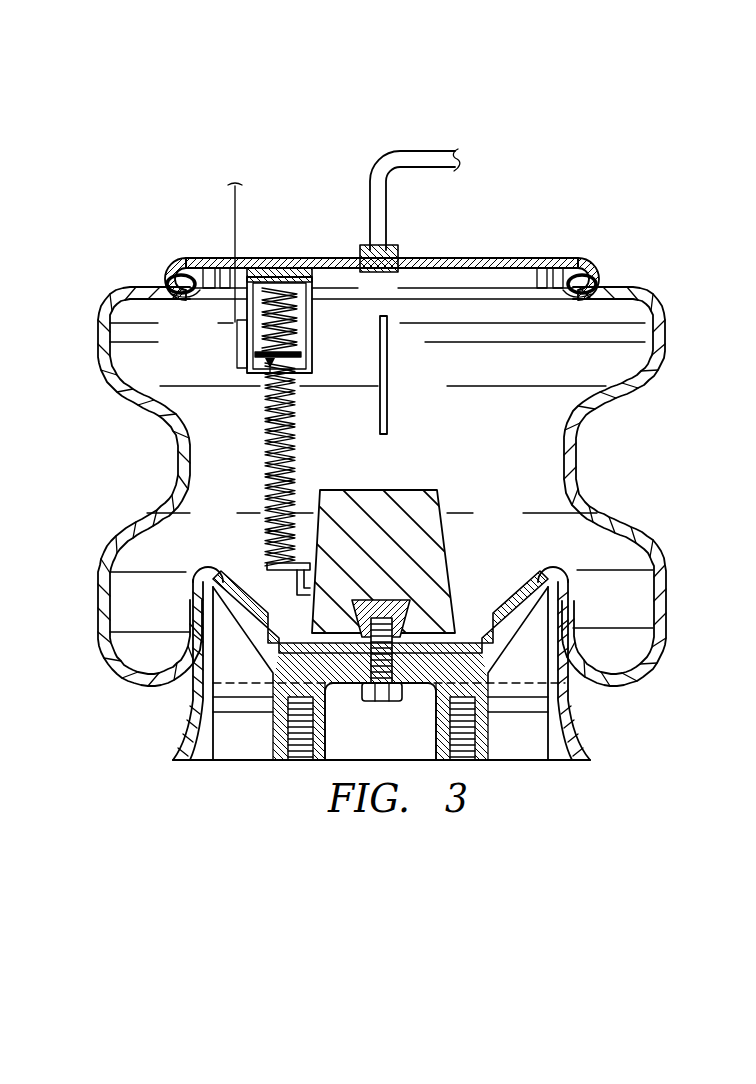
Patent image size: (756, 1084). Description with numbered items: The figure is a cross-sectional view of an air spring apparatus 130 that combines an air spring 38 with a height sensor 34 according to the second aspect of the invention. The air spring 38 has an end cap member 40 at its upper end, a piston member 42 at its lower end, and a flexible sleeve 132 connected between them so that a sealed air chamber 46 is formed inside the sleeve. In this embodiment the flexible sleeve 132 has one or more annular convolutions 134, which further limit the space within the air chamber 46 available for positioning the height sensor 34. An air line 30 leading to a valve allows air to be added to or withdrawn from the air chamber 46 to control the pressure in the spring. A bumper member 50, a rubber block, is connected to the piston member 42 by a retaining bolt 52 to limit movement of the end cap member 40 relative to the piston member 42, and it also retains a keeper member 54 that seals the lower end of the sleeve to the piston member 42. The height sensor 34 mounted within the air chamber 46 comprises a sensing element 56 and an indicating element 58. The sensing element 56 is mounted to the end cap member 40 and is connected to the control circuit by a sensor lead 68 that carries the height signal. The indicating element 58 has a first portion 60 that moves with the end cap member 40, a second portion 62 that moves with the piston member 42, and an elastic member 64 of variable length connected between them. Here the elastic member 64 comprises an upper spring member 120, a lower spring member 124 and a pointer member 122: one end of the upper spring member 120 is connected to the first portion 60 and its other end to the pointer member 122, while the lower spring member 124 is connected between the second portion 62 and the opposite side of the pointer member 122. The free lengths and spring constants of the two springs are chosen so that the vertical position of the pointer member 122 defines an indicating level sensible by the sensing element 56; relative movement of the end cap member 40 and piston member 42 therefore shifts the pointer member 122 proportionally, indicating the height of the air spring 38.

The air line 30 is at (436, 150).
The height sensor 34 is at (158, 357).
The air spring 38 is at (660, 285).
The end cap member 40 is at (494, 258).
The piston member 42 is at (570, 712).
The air chamber 46 is at (512, 451).
The bumper member 50 is at (404, 489).
The retaining bolt 52 is at (388, 703).
The keeper member 54 is at (484, 588).
The sensing element 56 is at (240, 336).
The indicating element 58 is at (262, 418).
The first portion 60 is at (310, 262).
The second portion 62 is at (265, 565).
The elastic member 64 is at (392, 356).
The sensor lead 68 is at (234, 219).
The upper spring member 120 is at (311, 336).
The pointer member 122 is at (311, 361).
The lower spring member 124 is at (298, 410).
The air spring apparatus 130 is at (566, 187).
The flexible sleeve 132 is at (668, 590).
The annular convolutions 134 is at (620, 446).